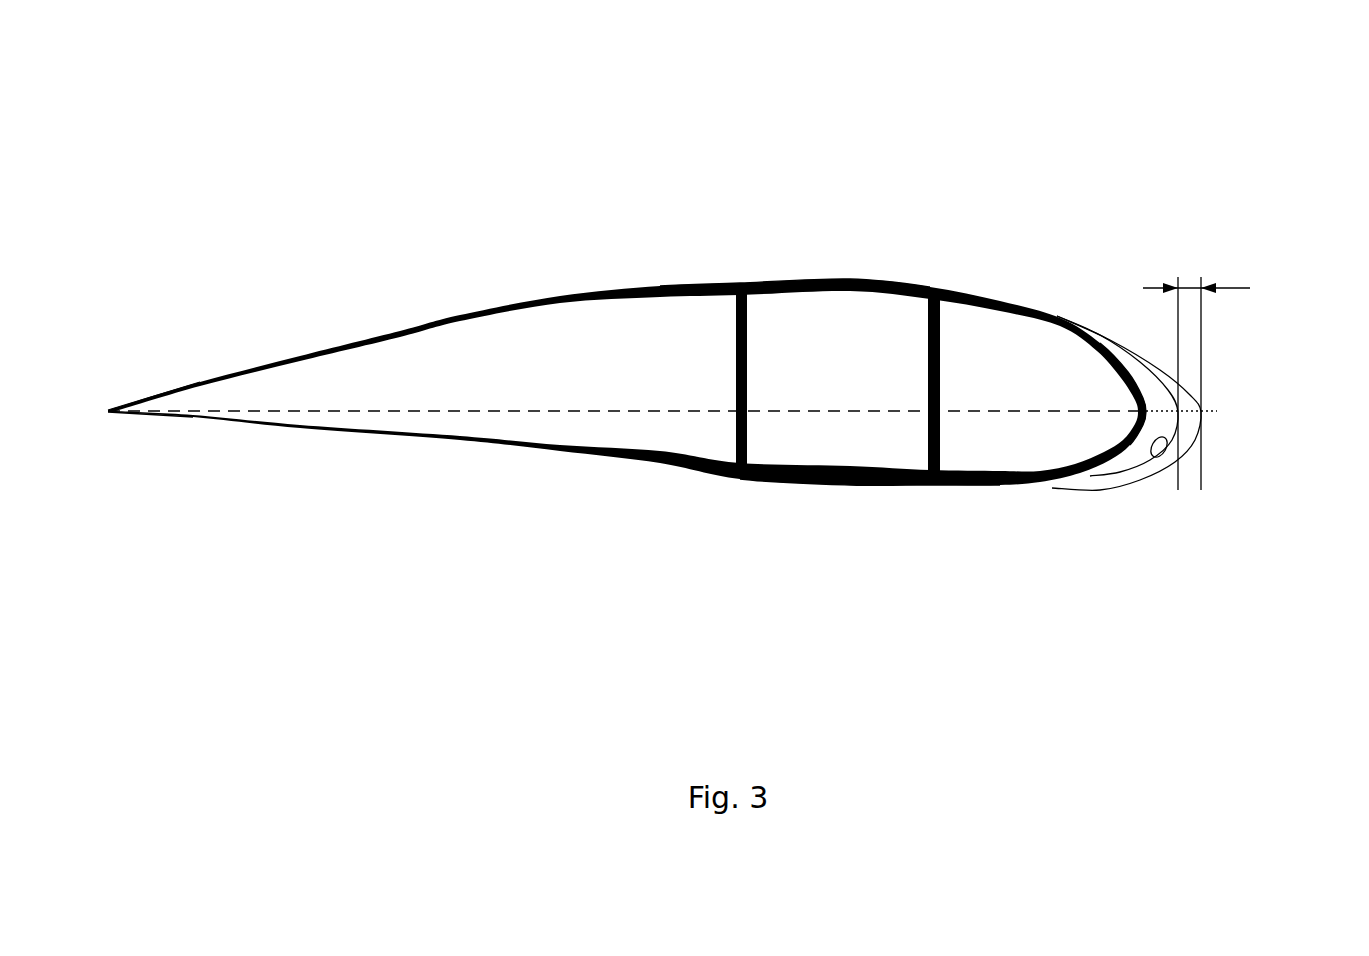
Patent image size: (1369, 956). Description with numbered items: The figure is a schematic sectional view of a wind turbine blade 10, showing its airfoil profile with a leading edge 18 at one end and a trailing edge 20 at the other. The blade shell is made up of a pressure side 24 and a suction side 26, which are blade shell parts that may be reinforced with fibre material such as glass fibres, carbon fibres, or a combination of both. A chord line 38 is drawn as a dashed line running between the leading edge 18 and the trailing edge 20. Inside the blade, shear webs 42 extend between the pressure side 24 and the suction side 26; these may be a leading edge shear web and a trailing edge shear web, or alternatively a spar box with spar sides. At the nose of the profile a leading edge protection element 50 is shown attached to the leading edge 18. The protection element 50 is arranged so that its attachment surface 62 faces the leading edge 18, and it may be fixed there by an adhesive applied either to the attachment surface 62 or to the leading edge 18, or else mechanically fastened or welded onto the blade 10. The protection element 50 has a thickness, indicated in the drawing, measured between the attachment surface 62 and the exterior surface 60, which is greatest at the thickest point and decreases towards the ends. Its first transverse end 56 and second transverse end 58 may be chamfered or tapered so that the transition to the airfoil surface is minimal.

The wind turbine blade 10 is at (509, 132).
The leading edge 18 is at (1149, 422).
The trailing edge 20 is at (108, 408).
The pressure side 24 is at (950, 483).
The suction side 26 is at (843, 278).
The chord line 38 is at (631, 415).
The shear webs 42 is at (747, 422).
The leading edge protection element 50 is at (1232, 486).
The first transverse end 56 is at (1052, 488).
The second transverse end 58 is at (1057, 316).
The exterior surface 60 is at (1201, 414).
The attachment surface 62 is at (1156, 457).